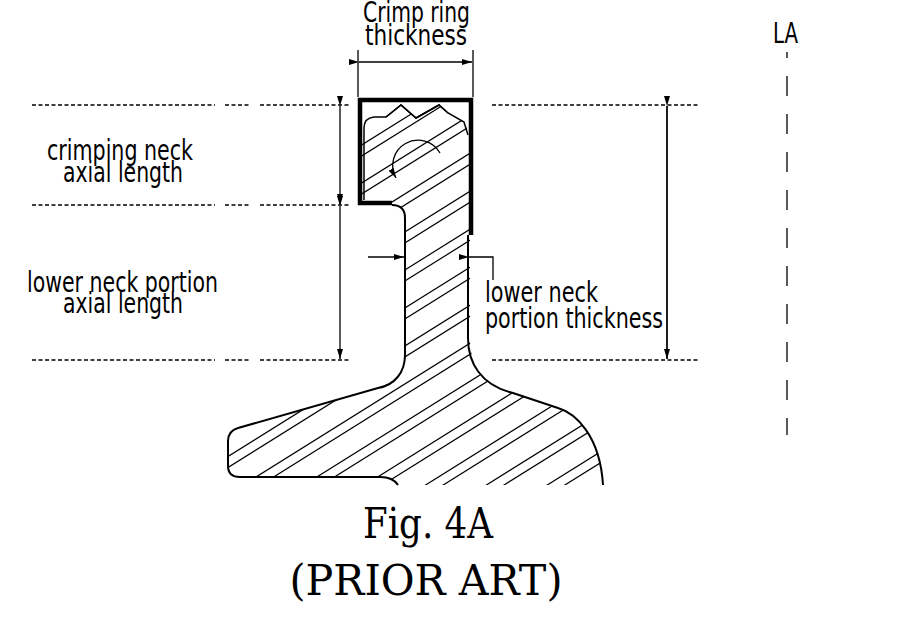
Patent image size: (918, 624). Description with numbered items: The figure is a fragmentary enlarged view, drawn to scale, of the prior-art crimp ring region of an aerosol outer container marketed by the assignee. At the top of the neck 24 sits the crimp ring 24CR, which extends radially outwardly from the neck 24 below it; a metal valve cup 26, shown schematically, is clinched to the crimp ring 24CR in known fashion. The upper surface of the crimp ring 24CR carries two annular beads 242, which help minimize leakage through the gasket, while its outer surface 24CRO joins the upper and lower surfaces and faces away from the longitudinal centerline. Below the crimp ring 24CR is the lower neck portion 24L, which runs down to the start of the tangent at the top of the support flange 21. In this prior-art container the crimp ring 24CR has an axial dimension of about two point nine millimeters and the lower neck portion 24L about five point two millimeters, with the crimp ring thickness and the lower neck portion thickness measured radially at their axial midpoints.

The support flange 21 is at (228, 453).
The neck 24 is at (670, 232).
The crimp ring 24CR is at (297, 155).
The lower neck portion 24L is at (311, 282).
The outer surface 24CRO is at (626, 232).
The valve cup 26 is at (474, 172).
The annular beads 242 is at (401, 108).